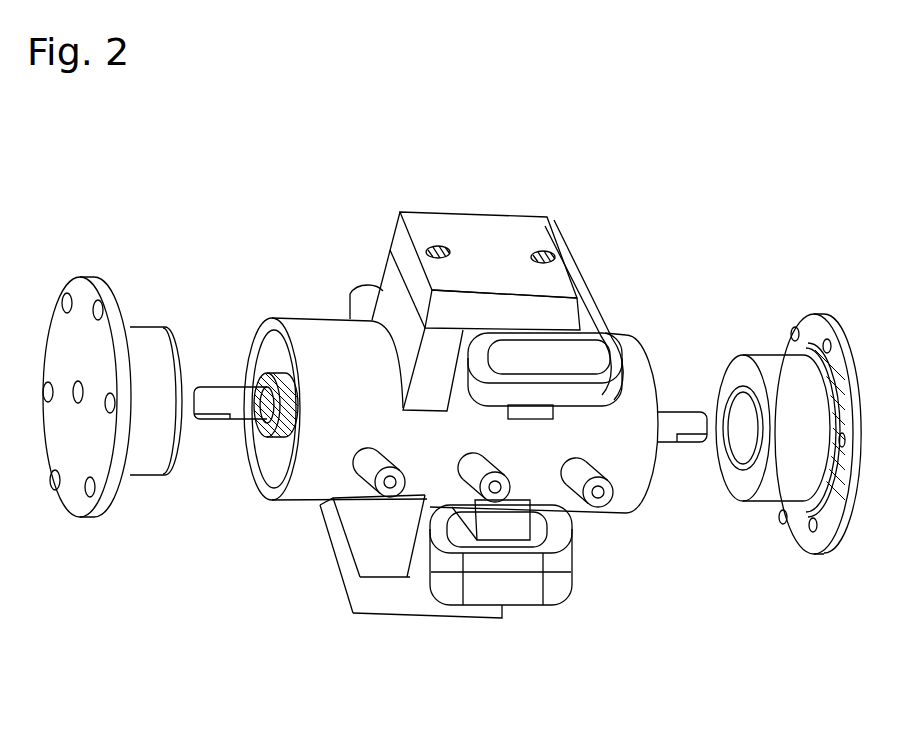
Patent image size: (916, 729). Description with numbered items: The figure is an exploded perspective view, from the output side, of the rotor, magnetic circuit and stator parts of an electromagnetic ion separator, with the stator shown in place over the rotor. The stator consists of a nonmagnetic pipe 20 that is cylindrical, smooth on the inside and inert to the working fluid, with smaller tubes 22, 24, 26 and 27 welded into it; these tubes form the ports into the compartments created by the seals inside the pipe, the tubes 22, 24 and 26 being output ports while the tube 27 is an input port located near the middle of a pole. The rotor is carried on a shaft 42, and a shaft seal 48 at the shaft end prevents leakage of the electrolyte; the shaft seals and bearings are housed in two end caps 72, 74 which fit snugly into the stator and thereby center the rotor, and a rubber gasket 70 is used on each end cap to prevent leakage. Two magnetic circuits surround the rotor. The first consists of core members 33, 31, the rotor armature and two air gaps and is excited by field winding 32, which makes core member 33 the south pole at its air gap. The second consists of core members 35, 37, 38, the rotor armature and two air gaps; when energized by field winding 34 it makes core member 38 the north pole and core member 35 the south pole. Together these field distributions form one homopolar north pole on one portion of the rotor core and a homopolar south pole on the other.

The nonmagnetic pipe 20 is at (308, 473).
The tube 22 is at (590, 467).
The tube 24 is at (472, 465).
The tube 26 is at (368, 477).
The tube 27 is at (355, 303).
The core member 31 is at (464, 293).
The field winding 32 is at (593, 337).
The core member 33 is at (382, 268).
The field winding 34 is at (517, 587).
The core member 35 is at (487, 596).
The core member 37 is at (465, 618).
The core member 38 is at (510, 522).
The shaft 42 is at (207, 383).
The seal 48 is at (263, 442).
The rubber gasket 70 is at (783, 417).
The end cap 72 is at (815, 558).
The end cap 74 is at (97, 518).